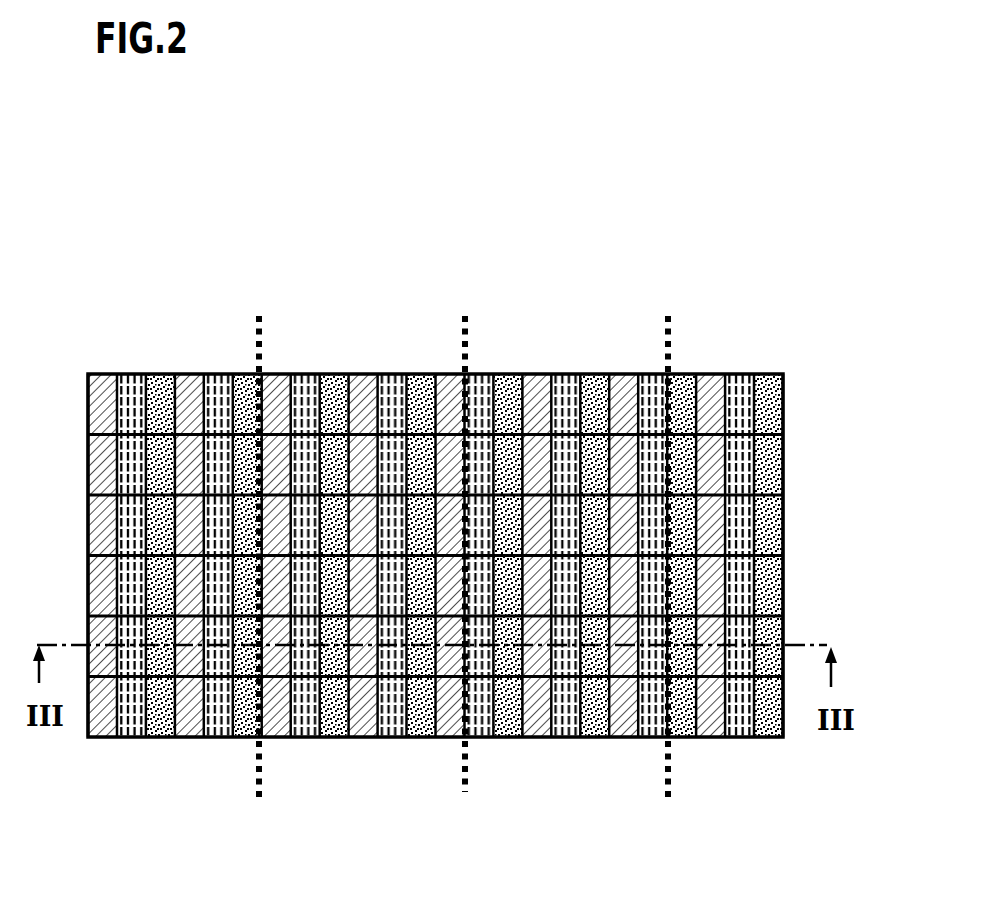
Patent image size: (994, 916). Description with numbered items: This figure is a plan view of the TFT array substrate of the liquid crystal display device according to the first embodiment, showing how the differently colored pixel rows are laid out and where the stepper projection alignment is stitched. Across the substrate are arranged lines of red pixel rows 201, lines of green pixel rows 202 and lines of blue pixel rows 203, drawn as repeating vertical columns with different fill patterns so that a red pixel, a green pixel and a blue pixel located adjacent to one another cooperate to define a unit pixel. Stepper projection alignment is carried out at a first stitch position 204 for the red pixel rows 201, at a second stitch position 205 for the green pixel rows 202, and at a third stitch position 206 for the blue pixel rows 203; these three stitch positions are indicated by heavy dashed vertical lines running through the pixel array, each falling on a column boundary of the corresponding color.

The red pixel rows 201 is at (504, 610).
The green pixel rows 202 is at (560, 603).
The blue pixel rows 203 is at (622, 612).
The first stitch position 204 is at (295, 516).
The second stitch position 205 is at (503, 514).
The third stitch position 206 is at (706, 518).